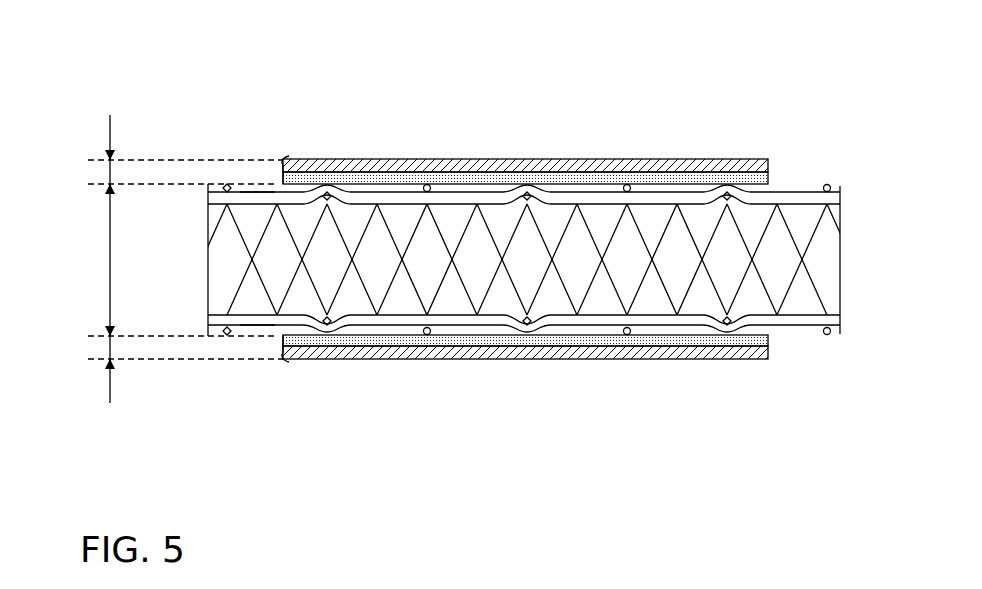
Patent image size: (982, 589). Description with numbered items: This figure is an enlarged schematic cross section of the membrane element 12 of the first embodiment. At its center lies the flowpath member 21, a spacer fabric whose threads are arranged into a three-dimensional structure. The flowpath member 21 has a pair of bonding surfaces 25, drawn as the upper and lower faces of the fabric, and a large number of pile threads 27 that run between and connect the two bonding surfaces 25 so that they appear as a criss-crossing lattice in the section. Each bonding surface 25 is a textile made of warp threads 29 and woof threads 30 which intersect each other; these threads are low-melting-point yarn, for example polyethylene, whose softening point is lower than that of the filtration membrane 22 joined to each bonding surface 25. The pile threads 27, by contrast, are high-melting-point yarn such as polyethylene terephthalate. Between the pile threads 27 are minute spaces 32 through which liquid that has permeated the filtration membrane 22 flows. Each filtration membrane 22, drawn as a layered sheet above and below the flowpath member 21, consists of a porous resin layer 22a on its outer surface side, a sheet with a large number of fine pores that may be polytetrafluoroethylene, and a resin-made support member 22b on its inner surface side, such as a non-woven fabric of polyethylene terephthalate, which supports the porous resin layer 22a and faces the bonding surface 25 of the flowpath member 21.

The panel 12 is at (423, 116).
The flowpath member 21 is at (110, 272).
The filtration membrane 22 is at (110, 172).
The porous resin layer 22a is at (661, 159).
The resin-made support member 22b is at (771, 181).
The bonding surface 25 is at (456, 188).
The pile thread 27 is at (232, 300).
The warp thread 29 is at (226, 183).
The woof thread 30 is at (258, 192).
The space 32 is at (437, 271).